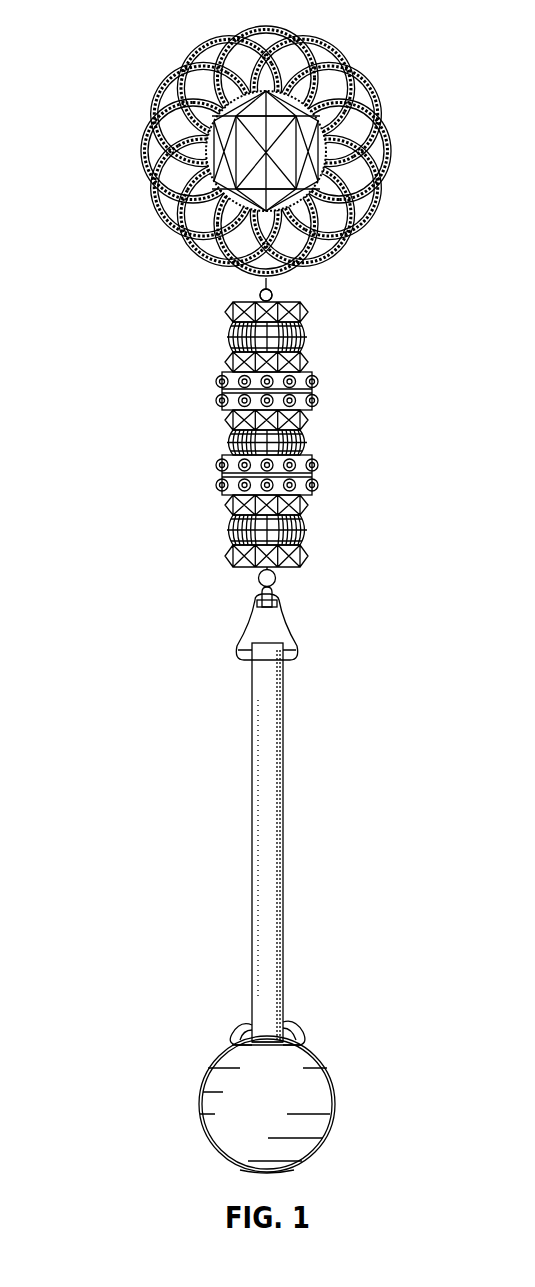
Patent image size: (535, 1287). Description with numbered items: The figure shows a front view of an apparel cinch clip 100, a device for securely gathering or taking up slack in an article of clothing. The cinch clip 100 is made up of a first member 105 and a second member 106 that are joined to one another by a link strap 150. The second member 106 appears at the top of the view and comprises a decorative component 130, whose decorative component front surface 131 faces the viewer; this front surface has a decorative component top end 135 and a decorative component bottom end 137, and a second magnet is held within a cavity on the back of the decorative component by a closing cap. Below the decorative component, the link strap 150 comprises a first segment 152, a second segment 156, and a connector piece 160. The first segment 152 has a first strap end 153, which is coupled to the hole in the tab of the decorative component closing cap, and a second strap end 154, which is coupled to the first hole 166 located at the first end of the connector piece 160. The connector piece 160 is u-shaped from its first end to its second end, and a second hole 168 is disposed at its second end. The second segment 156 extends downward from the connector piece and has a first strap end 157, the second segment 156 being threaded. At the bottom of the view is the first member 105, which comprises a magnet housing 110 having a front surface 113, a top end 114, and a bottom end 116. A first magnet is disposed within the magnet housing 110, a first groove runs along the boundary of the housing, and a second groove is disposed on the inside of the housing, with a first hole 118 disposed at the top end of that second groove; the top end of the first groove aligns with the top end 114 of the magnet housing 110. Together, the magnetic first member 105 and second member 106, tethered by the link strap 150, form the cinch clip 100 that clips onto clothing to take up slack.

The apparel cinch clip 100 is at (85, 147).
The first member 105 is at (257, 1084).
The second member 106 is at (268, 197).
The magnet housing 110 is at (251, 1118).
The front surface 113 is at (292, 1088).
The top end 114 is at (290, 1020).
The bottom end 116 is at (268, 1168).
The first hole 118 is at (255, 1040).
The decorative component 130 is at (268, 197).
The decorative component front surface 131 is at (283, 197).
The decorative component top end 135 is at (270, 268).
The decorative component bottom end 137 is at (312, 37).
The link strap 150 is at (263, 428).
The first segment 152 is at (303, 433).
The first strap end 153 is at (261, 290).
The second strap end 154 is at (261, 581).
The second segment 156 is at (258, 850).
The first strap end 157 is at (268, 1035).
The connector piece 160 is at (262, 620).
The first hole 166 is at (276, 602).
The second hole 168 is at (257, 646).